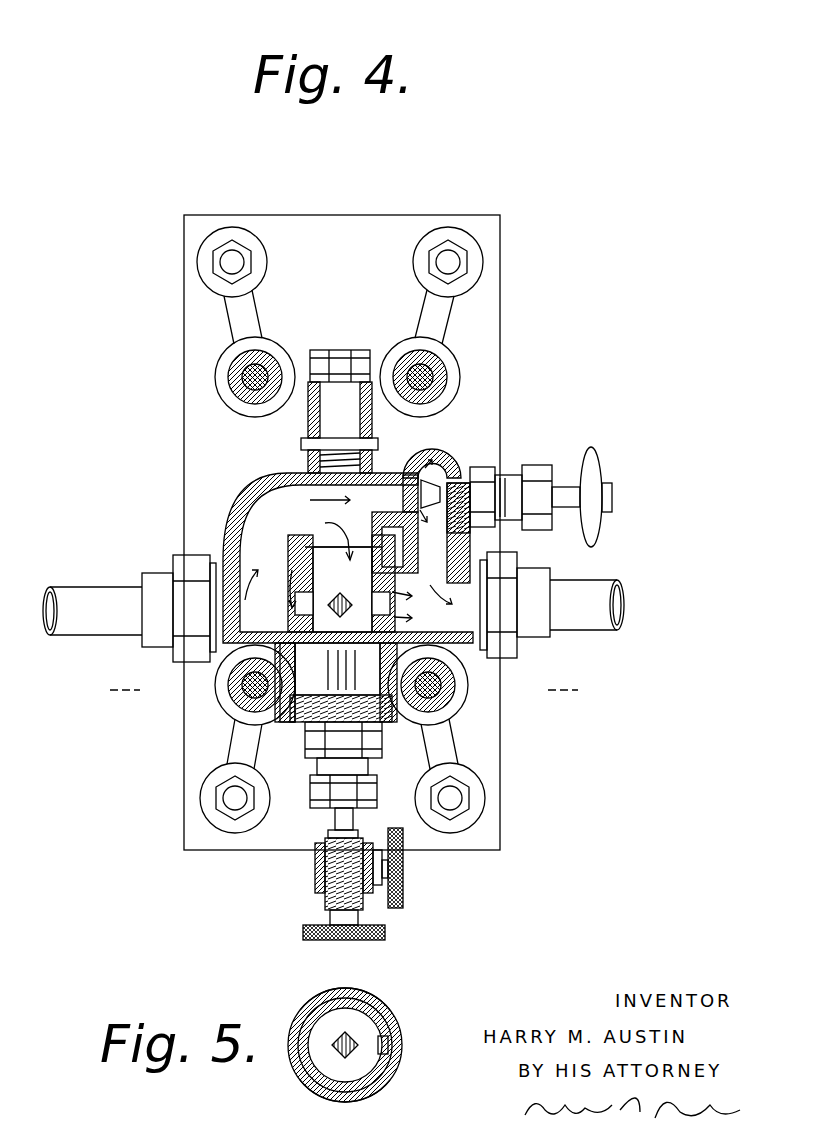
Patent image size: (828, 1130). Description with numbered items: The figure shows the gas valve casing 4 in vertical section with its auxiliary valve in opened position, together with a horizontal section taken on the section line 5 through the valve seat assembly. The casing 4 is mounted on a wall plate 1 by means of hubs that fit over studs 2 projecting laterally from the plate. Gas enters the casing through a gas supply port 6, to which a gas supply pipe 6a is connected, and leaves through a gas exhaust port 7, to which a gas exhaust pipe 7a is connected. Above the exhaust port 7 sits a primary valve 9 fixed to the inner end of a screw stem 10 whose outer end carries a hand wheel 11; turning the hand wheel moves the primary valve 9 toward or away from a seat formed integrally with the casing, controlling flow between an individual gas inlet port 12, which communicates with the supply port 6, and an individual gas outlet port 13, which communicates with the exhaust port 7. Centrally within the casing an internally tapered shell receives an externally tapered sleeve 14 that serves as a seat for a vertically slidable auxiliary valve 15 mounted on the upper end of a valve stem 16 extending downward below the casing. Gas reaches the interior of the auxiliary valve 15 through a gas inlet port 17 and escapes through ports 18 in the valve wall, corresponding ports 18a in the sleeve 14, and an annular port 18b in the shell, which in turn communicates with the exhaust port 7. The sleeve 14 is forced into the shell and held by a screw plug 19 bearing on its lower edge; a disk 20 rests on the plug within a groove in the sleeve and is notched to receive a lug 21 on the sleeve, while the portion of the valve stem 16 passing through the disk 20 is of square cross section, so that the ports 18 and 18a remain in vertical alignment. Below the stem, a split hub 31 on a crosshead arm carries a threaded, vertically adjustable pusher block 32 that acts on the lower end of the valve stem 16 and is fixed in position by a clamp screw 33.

In FIG. 4, the wall plate 1 is at (266, 864).
In FIG. 4, the studs 2 is at (234, 386).
In FIG. 4, the valve casing 4 is at (240, 504).
In FIG. 5, the valve casing 4 is at (311, 1004).
In FIG. 4, the section line 5 is at (347, 690).
In FIG. 4, the gas supply port 6 is at (257, 563).
In FIG. 4, the gas supply pipe 6a is at (129, 608).
In FIG. 4, the gas exhaust port 7 is at (447, 605).
In FIG. 4, the gas exhaust pipe 7a is at (552, 605).
In FIG. 4, the primary valve 9 is at (430, 494).
In FIG. 4, the screw stem 10 is at (560, 487).
In FIG. 4, the hand wheel 11 is at (600, 520).
In FIG. 4, the individual gas inlet port 12 is at (408, 498).
In FIG. 4, the individual gas outlet port 13 is at (433, 509).
In FIG. 4, the externally tapered sleeve 14 is at (245, 727).
In FIG. 5, the externally tapered sleeve 14 is at (386, 1010).
In FIG. 4, the auxiliary valve 15 is at (362, 568).
In FIG. 4, the valve stem 16 is at (338, 662).
In FIG. 5, the valve stem 16 is at (342, 1054).
In FIG. 4, the gas inlet port 17 is at (340, 547).
In FIG. 4, the ports 18 is at (308, 610).
In FIG. 4, the ports 18a is at (413, 594).
In FIG. 4, the annular port 18b is at (292, 590).
In FIG. 4, the screw plug 19 is at (305, 712).
In FIG. 4, the disk 20 is at (357, 700).
In FIG. 5, the disk 20 is at (346, 1020).
In FIG. 5, the lug 21 is at (400, 1045).
In FIG. 4, the split hub 31 is at (318, 877).
In FIG. 4, the pusher block 32 is at (328, 833).
In FIG. 4, the clamp screw 33 is at (403, 872).